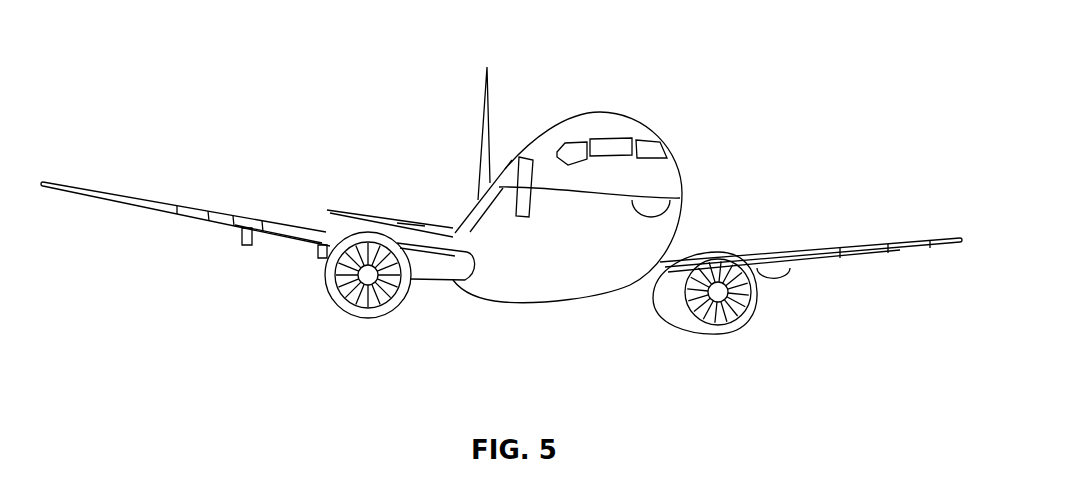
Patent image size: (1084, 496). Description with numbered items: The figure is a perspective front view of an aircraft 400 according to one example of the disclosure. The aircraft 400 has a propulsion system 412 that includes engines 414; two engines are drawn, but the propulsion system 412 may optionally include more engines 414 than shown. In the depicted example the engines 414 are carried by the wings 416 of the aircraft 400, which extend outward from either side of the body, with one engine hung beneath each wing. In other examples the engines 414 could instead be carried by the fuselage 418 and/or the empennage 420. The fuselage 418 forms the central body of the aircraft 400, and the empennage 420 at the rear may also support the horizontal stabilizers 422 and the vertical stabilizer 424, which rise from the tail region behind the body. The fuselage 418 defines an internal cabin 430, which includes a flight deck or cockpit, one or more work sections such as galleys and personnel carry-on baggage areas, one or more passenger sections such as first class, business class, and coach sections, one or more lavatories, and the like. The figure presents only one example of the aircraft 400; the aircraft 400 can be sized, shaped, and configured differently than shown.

The aircraft 400 is at (273, 67).
The propulsion system 412 is at (311, 303).
The engines 414 is at (363, 317).
The wings 416 is at (170, 212).
The fuselage 418 is at (683, 168).
The empennage 420 is at (473, 197).
The horizontal stabilizers 422 is at (362, 217).
The vertical stabilizer 424 is at (483, 107).
The internal cabin 430 is at (612, 145).